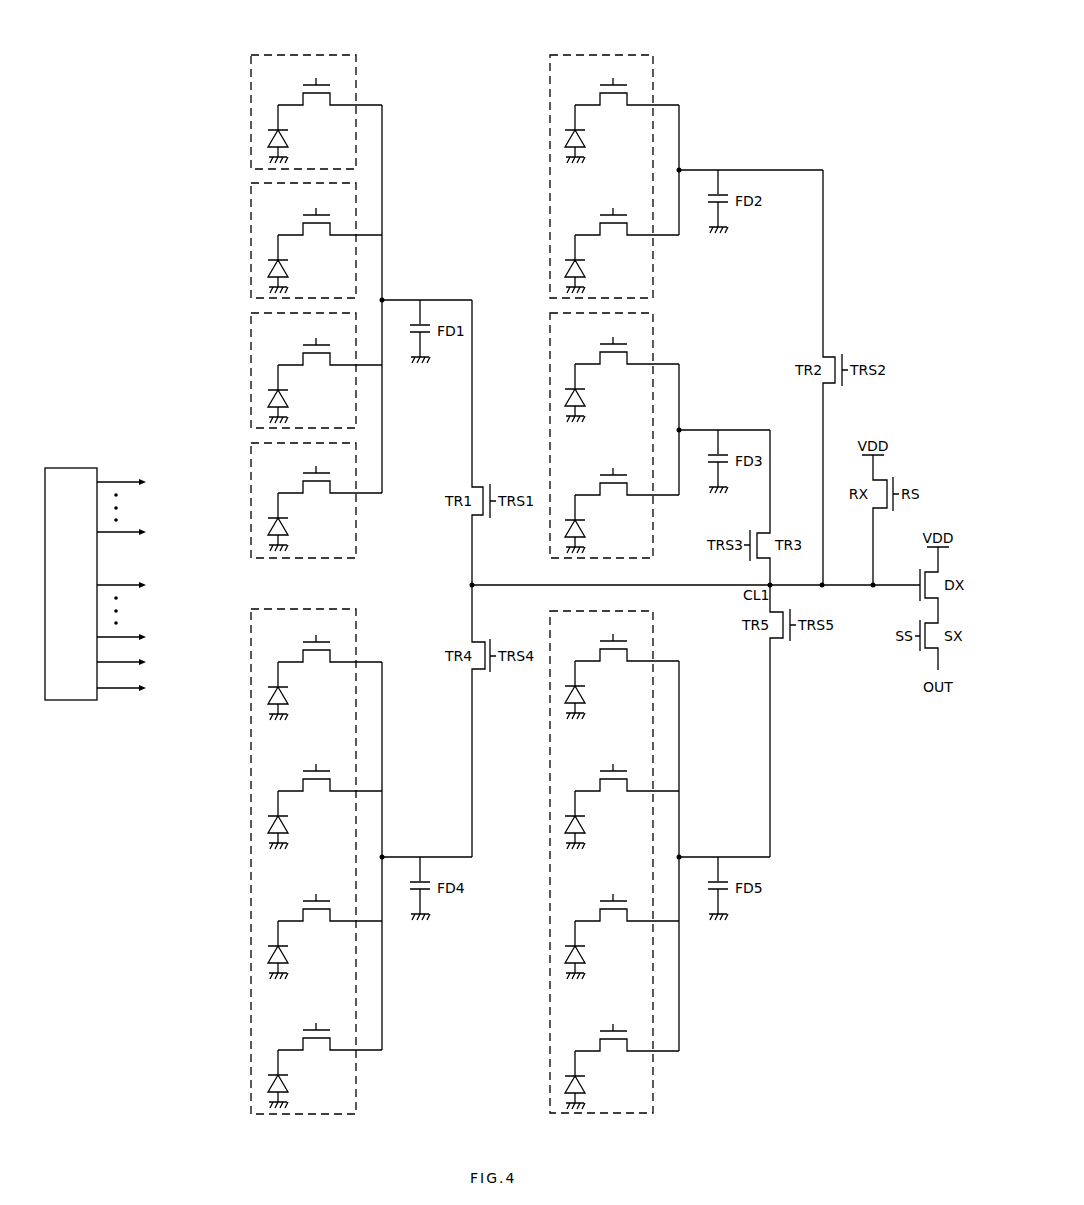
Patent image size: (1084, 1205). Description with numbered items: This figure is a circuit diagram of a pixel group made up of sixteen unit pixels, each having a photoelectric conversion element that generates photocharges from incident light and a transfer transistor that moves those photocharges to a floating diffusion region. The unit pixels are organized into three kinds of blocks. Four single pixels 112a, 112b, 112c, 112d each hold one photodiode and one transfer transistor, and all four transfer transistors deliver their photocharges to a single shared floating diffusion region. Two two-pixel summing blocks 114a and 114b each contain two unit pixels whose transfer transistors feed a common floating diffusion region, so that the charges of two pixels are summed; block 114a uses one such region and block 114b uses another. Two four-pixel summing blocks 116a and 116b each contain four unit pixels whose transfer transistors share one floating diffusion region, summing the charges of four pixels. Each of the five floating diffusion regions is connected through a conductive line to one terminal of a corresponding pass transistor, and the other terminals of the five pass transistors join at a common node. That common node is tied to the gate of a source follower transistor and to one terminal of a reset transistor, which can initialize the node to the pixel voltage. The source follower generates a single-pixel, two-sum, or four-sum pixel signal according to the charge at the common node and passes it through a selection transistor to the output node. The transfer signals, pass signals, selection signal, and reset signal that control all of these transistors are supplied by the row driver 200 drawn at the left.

The single pixel 112a is at (251, 113).
The single pixel 112b is at (251, 242).
The single pixel 112c is at (251, 372).
The single pixel 112d is at (251, 500).
The 2-SUM pixel block 114a is at (550, 177).
The 2-SUM pixel block 114b is at (550, 437).
The 4-SUM pixel block 116a is at (251, 863).
The 4-SUM pixel block 116b is at (550, 865).
The row driver 200 is at (60, 594).